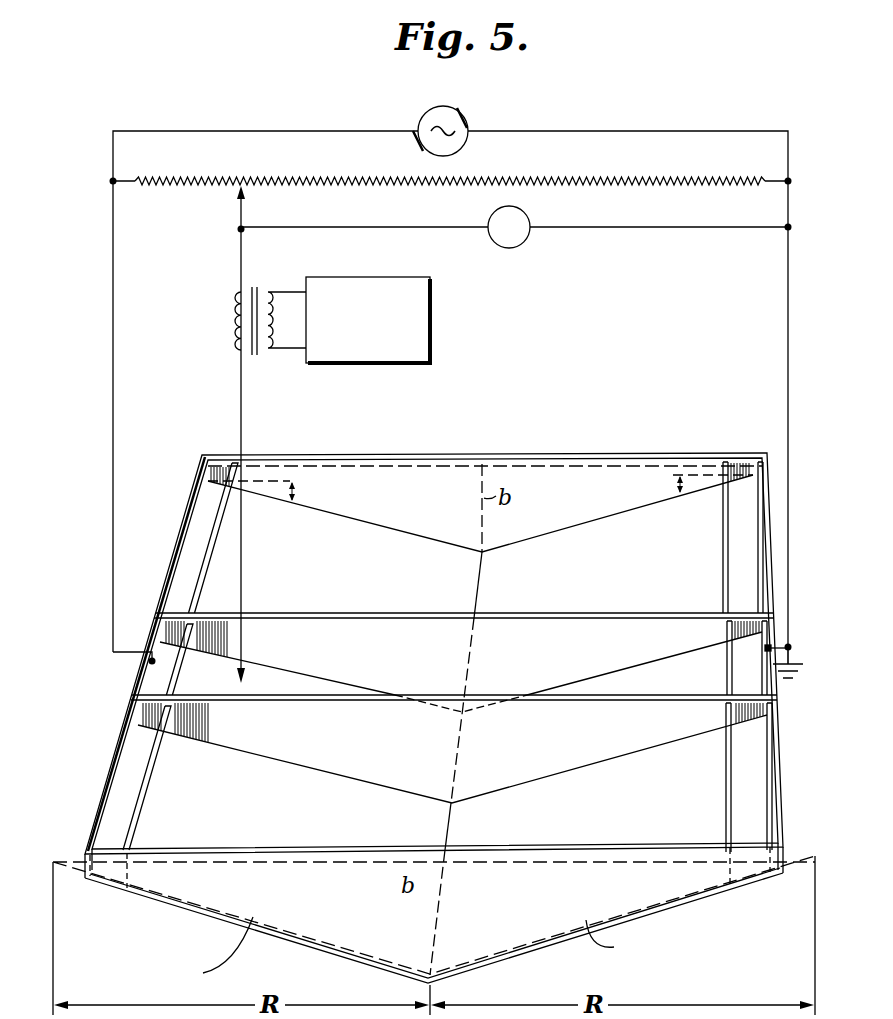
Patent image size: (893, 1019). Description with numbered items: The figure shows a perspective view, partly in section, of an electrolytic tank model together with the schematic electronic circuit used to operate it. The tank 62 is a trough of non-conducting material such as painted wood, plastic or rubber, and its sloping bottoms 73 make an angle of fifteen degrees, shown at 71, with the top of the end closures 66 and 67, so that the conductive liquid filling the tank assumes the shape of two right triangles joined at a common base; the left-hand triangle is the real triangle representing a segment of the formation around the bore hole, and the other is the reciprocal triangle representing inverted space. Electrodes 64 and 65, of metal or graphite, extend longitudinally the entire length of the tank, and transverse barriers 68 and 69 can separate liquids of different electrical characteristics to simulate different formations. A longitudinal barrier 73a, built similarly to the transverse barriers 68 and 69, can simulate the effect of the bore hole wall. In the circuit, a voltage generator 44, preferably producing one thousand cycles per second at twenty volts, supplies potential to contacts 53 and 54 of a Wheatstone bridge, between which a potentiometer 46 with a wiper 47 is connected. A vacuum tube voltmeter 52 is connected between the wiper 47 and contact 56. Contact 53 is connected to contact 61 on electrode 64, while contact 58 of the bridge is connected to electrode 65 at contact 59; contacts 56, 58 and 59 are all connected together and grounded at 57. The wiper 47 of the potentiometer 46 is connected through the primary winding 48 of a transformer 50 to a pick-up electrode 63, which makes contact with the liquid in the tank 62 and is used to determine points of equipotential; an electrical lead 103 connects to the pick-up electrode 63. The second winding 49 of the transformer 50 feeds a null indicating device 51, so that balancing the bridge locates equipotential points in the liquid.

The voltage generator 44 is at (426, 114).
The potentiometer 46 is at (329, 176).
The wiper 47 is at (237, 213).
The primary winding 48 is at (233, 316).
The second winding 49 is at (272, 350).
The transformer 50 is at (242, 335).
The null indicating device 51 is at (433, 321).
The vacuum tube voltmeter 52 is at (510, 249).
The contact 53 is at (110, 182).
The contact 54 is at (790, 180).
The contact 56 is at (790, 227).
The ground 57 is at (797, 679).
The contact 58 is at (792, 648).
The contact 59 is at (766, 656).
The contact 61 is at (149, 663).
The tank 62 is at (549, 952).
The pick-up electrode 63 is at (239, 677).
The electrode 64 is at (118, 785).
The electrode 65 is at (772, 744).
The end closure 66 is at (589, 452).
The end closure 67 is at (352, 948).
The transverse barrier 68 is at (358, 706).
The transverse barrier 69 is at (418, 625).
The angle 71 is at (290, 490).
The sloping bottom 73 is at (358, 587).
The longitudinal barrier 73a is at (214, 533).
The electrical lead 103 is at (238, 412).